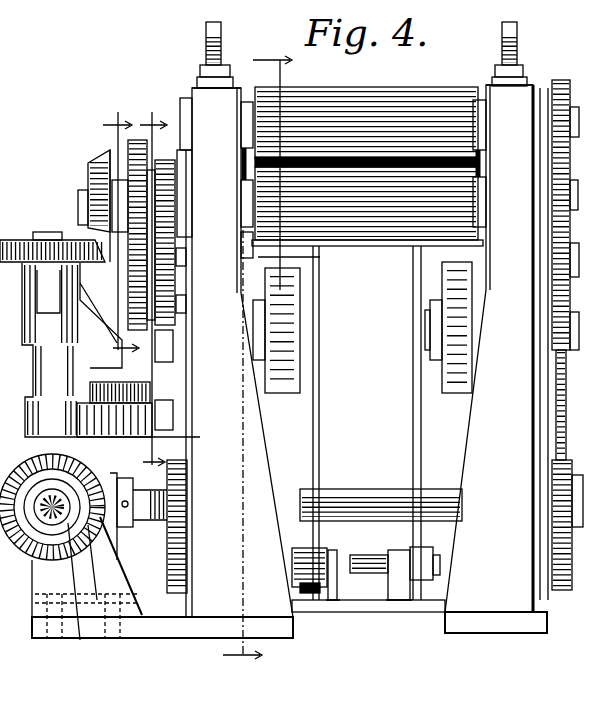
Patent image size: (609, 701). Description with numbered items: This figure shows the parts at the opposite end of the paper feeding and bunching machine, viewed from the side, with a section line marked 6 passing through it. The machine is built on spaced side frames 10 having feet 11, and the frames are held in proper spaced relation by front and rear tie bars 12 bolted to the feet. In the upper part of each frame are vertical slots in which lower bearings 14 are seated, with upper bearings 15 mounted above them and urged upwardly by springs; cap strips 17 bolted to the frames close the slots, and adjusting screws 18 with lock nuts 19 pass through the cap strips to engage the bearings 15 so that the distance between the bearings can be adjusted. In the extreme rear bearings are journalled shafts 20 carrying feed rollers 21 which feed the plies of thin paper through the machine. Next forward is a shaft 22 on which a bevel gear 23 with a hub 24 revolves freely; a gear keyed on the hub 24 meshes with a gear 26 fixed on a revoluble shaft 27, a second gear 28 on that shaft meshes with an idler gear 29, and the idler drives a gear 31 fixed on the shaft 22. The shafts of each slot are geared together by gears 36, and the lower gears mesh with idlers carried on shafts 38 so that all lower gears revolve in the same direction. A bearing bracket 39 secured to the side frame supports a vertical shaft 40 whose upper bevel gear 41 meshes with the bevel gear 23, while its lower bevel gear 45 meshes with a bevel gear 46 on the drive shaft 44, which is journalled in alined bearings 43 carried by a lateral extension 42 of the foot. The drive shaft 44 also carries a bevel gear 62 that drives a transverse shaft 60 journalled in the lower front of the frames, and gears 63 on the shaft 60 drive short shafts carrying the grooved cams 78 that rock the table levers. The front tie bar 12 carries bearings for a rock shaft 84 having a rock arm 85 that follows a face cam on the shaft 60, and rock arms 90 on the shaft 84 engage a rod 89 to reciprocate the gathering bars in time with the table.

The section line 6- 6 is at (257, 363).
The side frame 10 is at (248, 434).
The foot 11 is at (478, 648).
The tie bar 12 is at (360, 642).
The bearing 14 is at (478, 216).
The upper bearing 15 is at (180, 108).
The cap strip 17 is at (208, 100).
The adjusting screw 18 is at (206, 44).
The lock nut 19 is at (200, 71).
The shaft 20 is at (579, 135).
The feed roller 21 is at (396, 92).
The shaft 22 is at (80, 205).
The bevel gear 23 is at (88, 172).
The hub 24 is at (119, 178).
The gear 26 is at (160, 350).
The revoluble shaft 27 is at (122, 294).
The second gear 28 is at (176, 303).
The idler gear 29 is at (176, 256).
The gear 31 is at (175, 150).
The gear 36 is at (570, 82).
The shaft 38 is at (570, 285).
The bearing bracket 39 is at (120, 400).
The shaft 40 is at (54, 228).
The bevel gear 41 is at (11, 239).
The lateral extension 42 is at (55, 640).
The bearing 43 is at (42, 588).
The drive shaft 44 is at (80, 640).
The bevel gear 45 is at (114, 420).
The bevel gear 46 is at (110, 565).
The transverse shaft 60 is at (378, 474).
The bevel gear 62 is at (115, 556).
The gear 63 is at (173, 595).
The cam 78 is at (455, 285).
The rock shaft 84 is at (375, 565).
The rock arm 85 is at (303, 600).
The rod 89 is at (392, 549).
The rock arm 90 is at (422, 350).